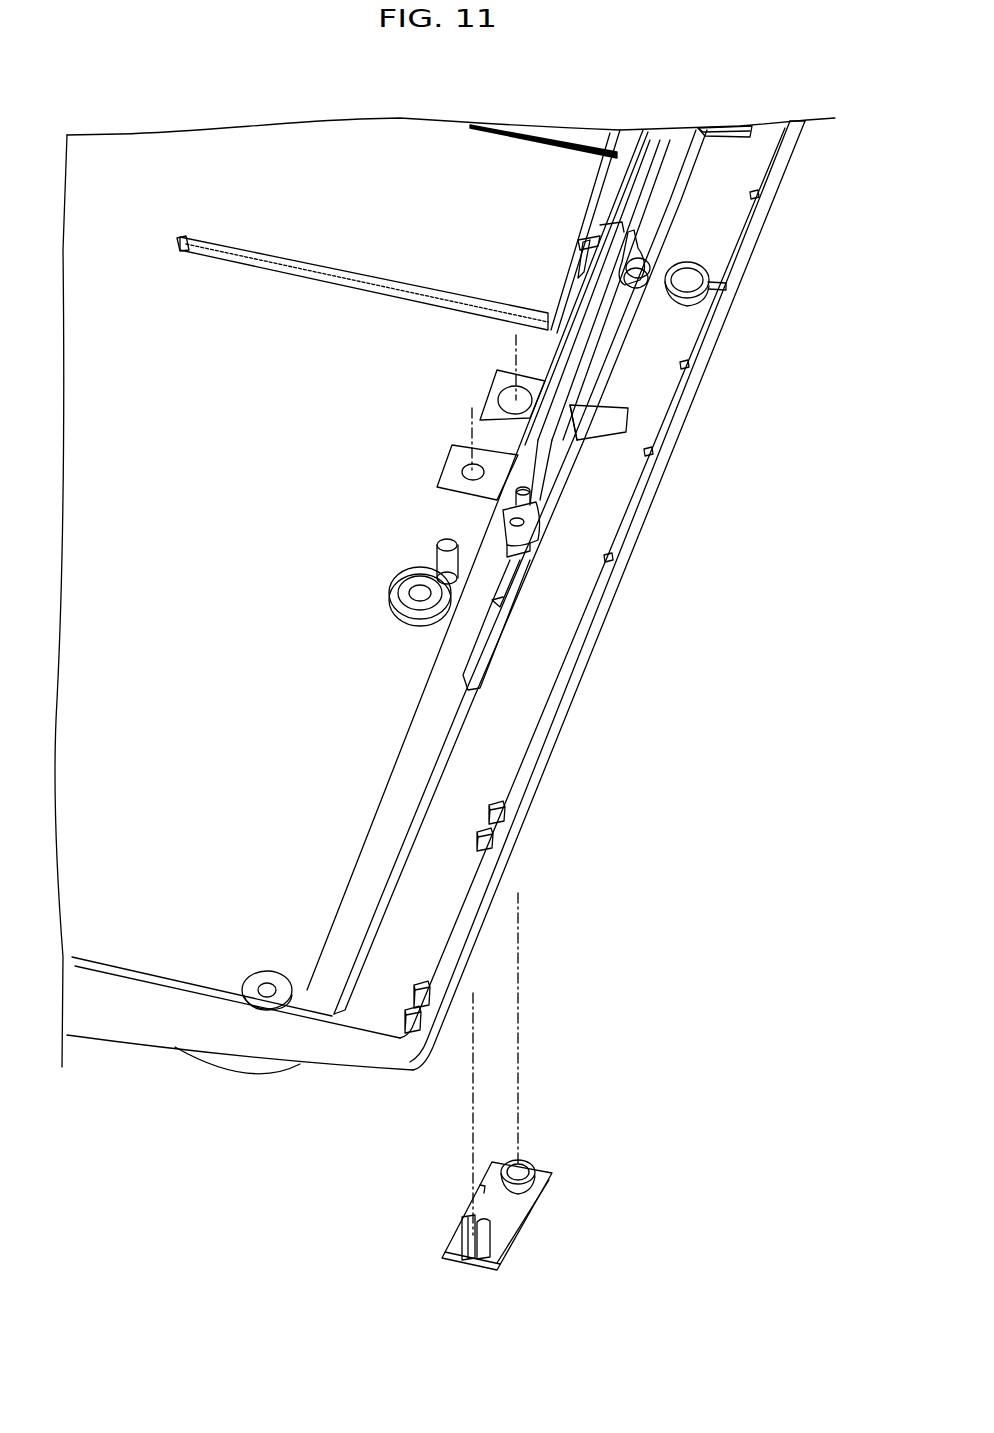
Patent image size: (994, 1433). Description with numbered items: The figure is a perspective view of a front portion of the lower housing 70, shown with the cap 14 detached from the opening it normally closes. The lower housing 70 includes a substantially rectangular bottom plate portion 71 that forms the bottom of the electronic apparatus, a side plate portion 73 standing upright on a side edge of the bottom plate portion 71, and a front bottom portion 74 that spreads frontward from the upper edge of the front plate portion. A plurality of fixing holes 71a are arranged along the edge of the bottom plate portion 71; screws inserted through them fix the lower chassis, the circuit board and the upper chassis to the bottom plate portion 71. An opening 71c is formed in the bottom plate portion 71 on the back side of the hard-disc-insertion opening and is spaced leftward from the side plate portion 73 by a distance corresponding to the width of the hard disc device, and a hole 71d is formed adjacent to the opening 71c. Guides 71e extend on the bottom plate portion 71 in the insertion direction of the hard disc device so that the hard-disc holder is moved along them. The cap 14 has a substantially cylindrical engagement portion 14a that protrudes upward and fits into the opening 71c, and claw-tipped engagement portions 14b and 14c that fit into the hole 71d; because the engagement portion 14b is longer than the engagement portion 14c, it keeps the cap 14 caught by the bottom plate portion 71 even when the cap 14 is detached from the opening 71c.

The cap 14 is at (527, 1228).
The engagement portion 14a is at (538, 1200).
The engagement portion 14b is at (488, 1240).
The engagement portion 14c is at (468, 1265).
The lower housing 70 is at (628, 590).
The bottom plate portion 71 is at (218, 600).
The fixing holes 71a is at (405, 575).
The opening 71c is at (502, 398).
The hole 71d is at (468, 467).
The guides 71e is at (547, 135).
The side plate portion 73 is at (142, 1015).
The front bottom portion 74 is at (598, 500).